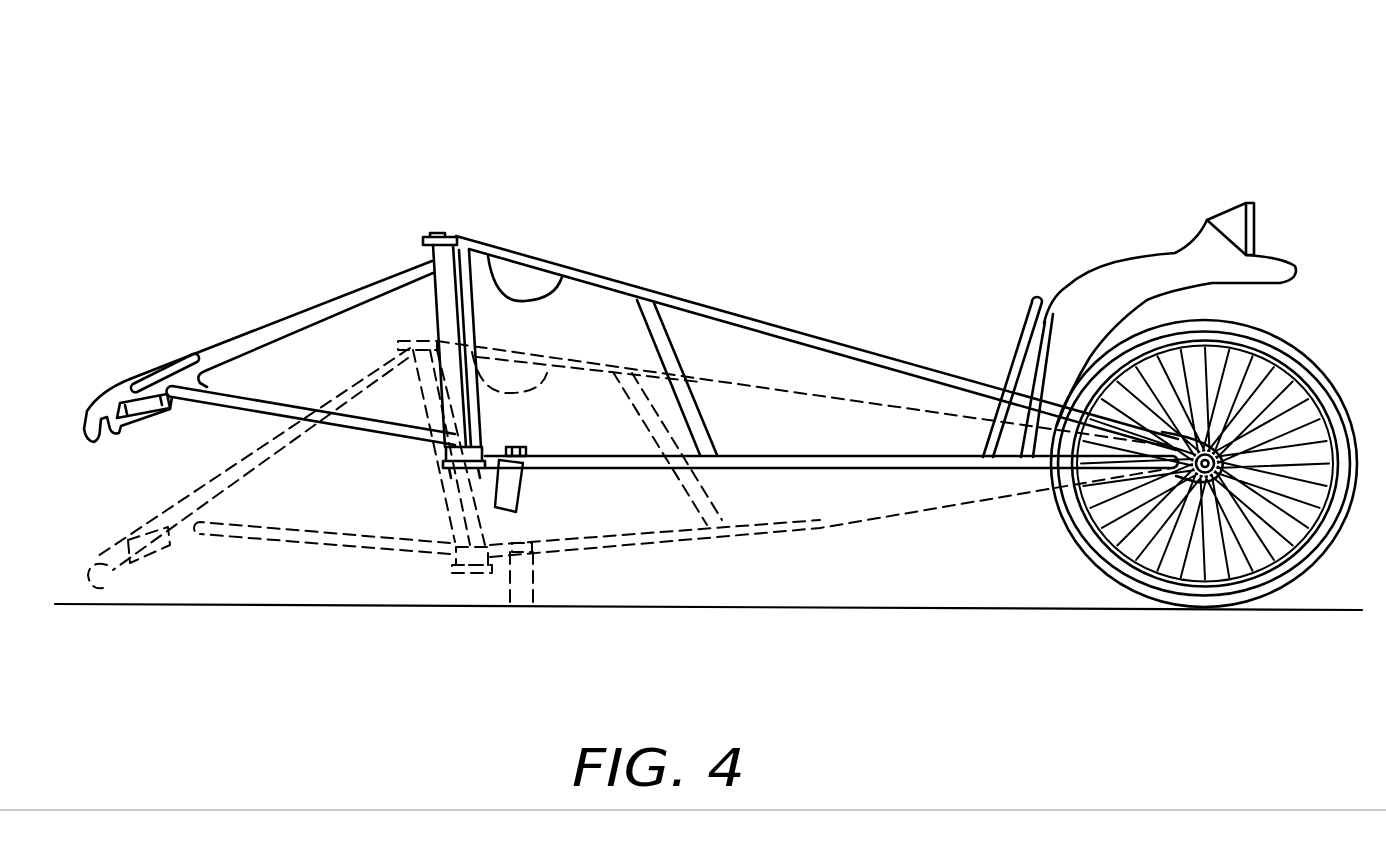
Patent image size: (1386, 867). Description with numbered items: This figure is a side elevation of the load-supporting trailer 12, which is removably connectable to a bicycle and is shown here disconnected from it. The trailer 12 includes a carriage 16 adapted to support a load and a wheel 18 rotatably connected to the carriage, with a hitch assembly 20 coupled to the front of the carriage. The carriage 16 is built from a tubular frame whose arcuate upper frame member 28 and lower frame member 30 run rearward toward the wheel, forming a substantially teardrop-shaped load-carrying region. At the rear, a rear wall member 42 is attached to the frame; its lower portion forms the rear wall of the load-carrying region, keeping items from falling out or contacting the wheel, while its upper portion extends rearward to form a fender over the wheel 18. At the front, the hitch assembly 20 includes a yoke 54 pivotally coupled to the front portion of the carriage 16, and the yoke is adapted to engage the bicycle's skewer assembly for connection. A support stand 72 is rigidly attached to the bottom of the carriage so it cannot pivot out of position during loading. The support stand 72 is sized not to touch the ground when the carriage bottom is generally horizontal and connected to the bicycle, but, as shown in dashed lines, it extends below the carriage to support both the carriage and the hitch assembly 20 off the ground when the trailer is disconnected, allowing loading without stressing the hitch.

The trailer 12 is at (308, 95).
The carriage 16 is at (797, 258).
The wheel 18 is at (1301, 337).
The hitch assembly 20 is at (270, 243).
The upper frame member 28 is at (827, 333).
The lower frame member 30 is at (755, 452).
The rear wall member 42 is at (1123, 255).
The yoke 54 is at (233, 328).
The support stand 72 is at (515, 492).